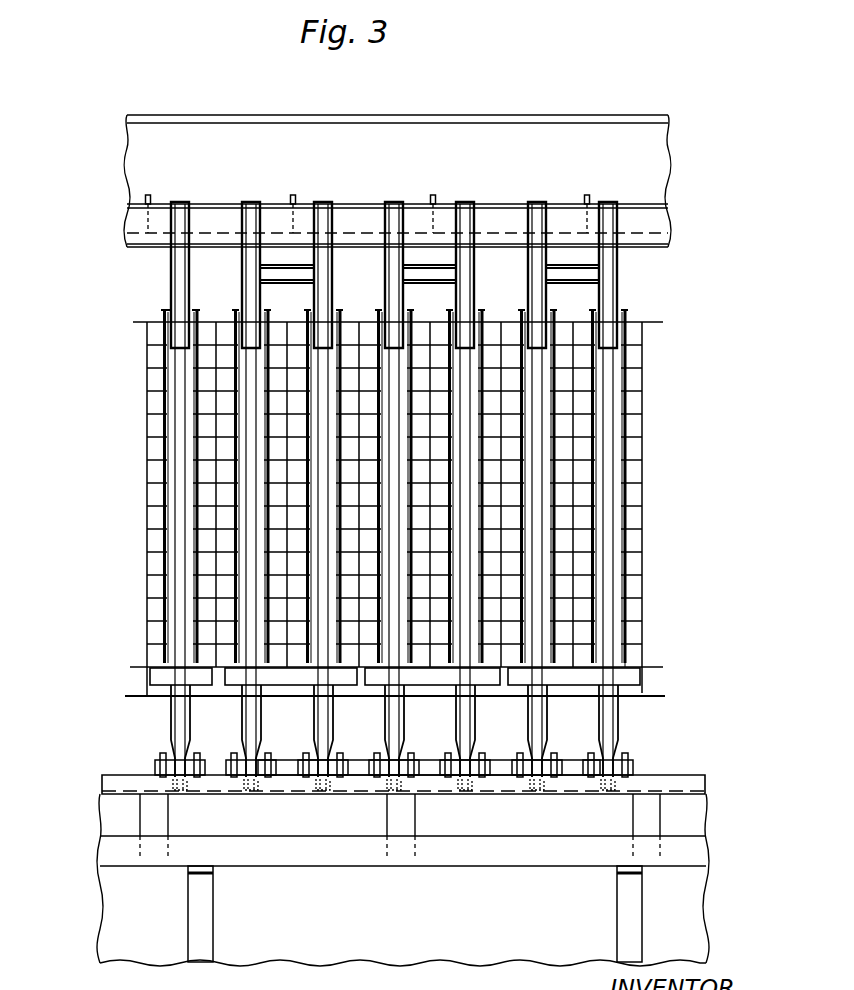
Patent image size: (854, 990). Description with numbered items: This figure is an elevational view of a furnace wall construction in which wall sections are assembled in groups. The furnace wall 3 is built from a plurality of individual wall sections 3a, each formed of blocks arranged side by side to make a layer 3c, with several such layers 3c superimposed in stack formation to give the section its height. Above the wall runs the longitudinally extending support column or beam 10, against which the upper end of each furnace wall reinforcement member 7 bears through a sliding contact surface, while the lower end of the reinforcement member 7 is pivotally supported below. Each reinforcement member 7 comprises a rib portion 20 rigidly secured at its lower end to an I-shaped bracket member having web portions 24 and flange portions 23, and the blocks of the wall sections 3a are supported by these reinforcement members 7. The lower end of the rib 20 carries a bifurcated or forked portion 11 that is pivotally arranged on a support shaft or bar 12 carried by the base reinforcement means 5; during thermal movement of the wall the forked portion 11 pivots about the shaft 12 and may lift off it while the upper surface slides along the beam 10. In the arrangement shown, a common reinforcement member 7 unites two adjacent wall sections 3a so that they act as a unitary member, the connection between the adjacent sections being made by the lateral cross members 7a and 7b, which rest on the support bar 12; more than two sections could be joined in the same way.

The furnace wall 3 is at (140, 545).
The wall section 3a is at (642, 560).
The layer 3c is at (150, 355).
The base reinforcement means 5 is at (133, 855).
The furnace wall reinforcement member 7 is at (172, 615).
The lateral cross member 7a is at (582, 677).
The lateral cross member 7b is at (593, 270).
The longitudinally extending support beam 10 is at (138, 144).
The bifurcated portion 11 is at (173, 758).
The support shaft 12 is at (287, 767).
The rib portion 20 is at (180, 470).
The flange portion 23 is at (165, 430).
The web portion 24 is at (170, 402).